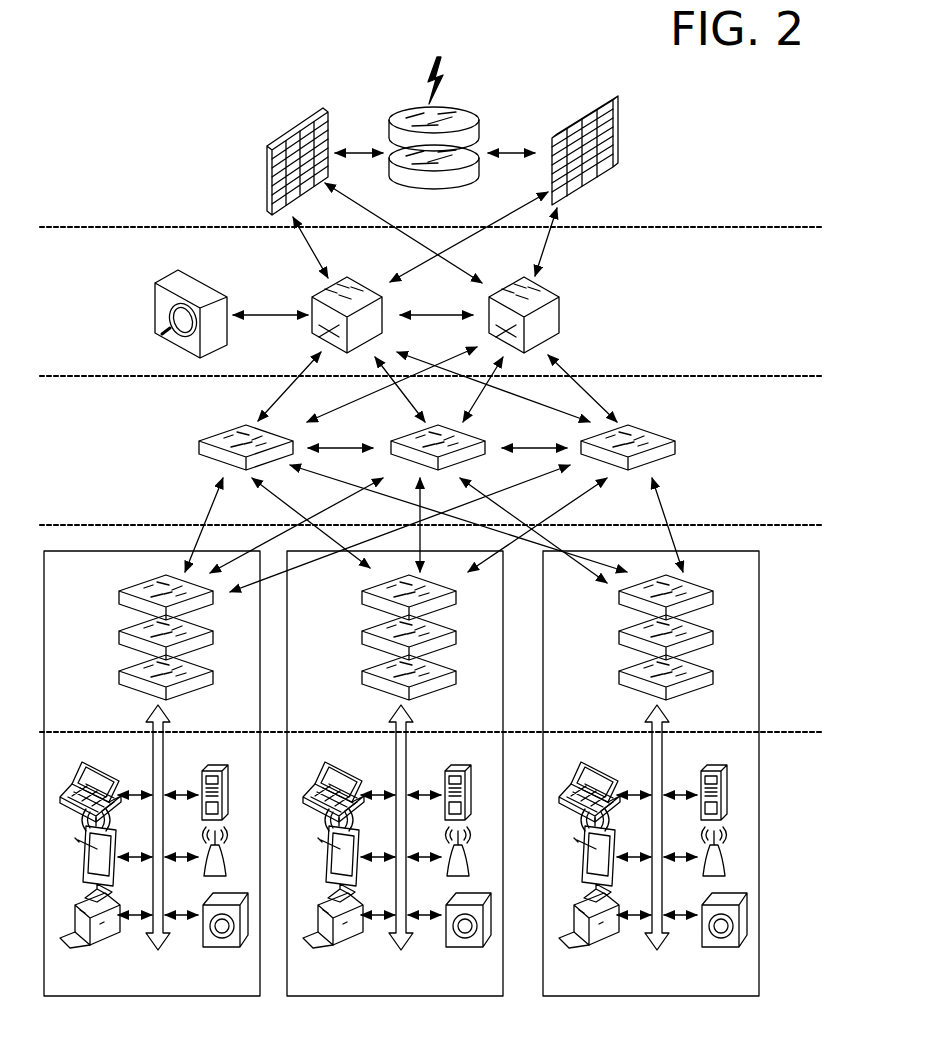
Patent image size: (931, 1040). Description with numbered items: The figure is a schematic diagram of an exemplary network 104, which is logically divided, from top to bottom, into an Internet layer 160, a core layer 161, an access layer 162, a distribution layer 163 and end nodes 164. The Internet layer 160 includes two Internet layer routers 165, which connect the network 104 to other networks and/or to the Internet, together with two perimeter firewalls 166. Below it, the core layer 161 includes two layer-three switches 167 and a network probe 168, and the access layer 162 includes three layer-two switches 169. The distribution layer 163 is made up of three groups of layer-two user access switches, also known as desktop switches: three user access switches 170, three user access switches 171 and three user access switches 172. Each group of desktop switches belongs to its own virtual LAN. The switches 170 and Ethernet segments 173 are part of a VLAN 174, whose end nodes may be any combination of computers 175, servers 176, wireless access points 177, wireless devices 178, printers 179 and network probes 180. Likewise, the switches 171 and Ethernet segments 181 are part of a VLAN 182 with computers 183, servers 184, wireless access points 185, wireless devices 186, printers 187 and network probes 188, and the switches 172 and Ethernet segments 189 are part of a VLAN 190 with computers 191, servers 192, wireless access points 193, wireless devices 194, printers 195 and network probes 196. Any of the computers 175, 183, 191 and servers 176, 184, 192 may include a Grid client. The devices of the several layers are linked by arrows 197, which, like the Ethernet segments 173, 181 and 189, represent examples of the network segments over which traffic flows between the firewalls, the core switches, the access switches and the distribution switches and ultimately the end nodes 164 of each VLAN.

The network 104 is at (222, 76).
The Internet layer 160 is at (706, 163).
The core layer 161 is at (736, 344).
The access layer 162 is at (736, 498).
The distribution layer 163 is at (794, 692).
The end nodes 164 is at (794, 889).
The Internet layer router 165 is at (388, 124).
The perimeter firewall 166 is at (268, 187).
The layer-3 switch 167 is at (316, 295).
The network probe 168 is at (153, 322).
The layer-2 switch 169 is at (200, 445).
The layer-2 user access switch 170 is at (143, 637).
The layer-2 user access switch 171 is at (386, 637).
The layer-2 user access switch 172 is at (643, 637).
The Ethernet segment 173 is at (139, 827).
The VLAN 174 is at (153, 989).
The computer 175 is at (86, 786).
The server 176 is at (198, 803).
The wireless access point 177 is at (198, 864).
The wireless device 178 is at (85, 847).
The printer 179 is at (87, 914).
The network probe 180 is at (217, 933).
The Ethernet segment 181 is at (382, 827).
The VLAN 182 is at (396, 989).
The computer 183 is at (329, 786).
The server 184 is at (441, 803).
The wireless access point 185 is at (441, 864).
The wireless device 186 is at (328, 847).
The printer 187 is at (330, 914).
The network probe 188 is at (460, 933).
The Ethernet segment 189 is at (638, 827).
The VLAN 190 is at (652, 989).
The computer 191 is at (585, 786).
The server 192 is at (697, 803).
The wireless access point 193 is at (697, 864).
The wireless device 194 is at (584, 847).
The printer 195 is at (586, 914).
The network probe 196 is at (716, 933).
The arrow 197 is at (398, 250).